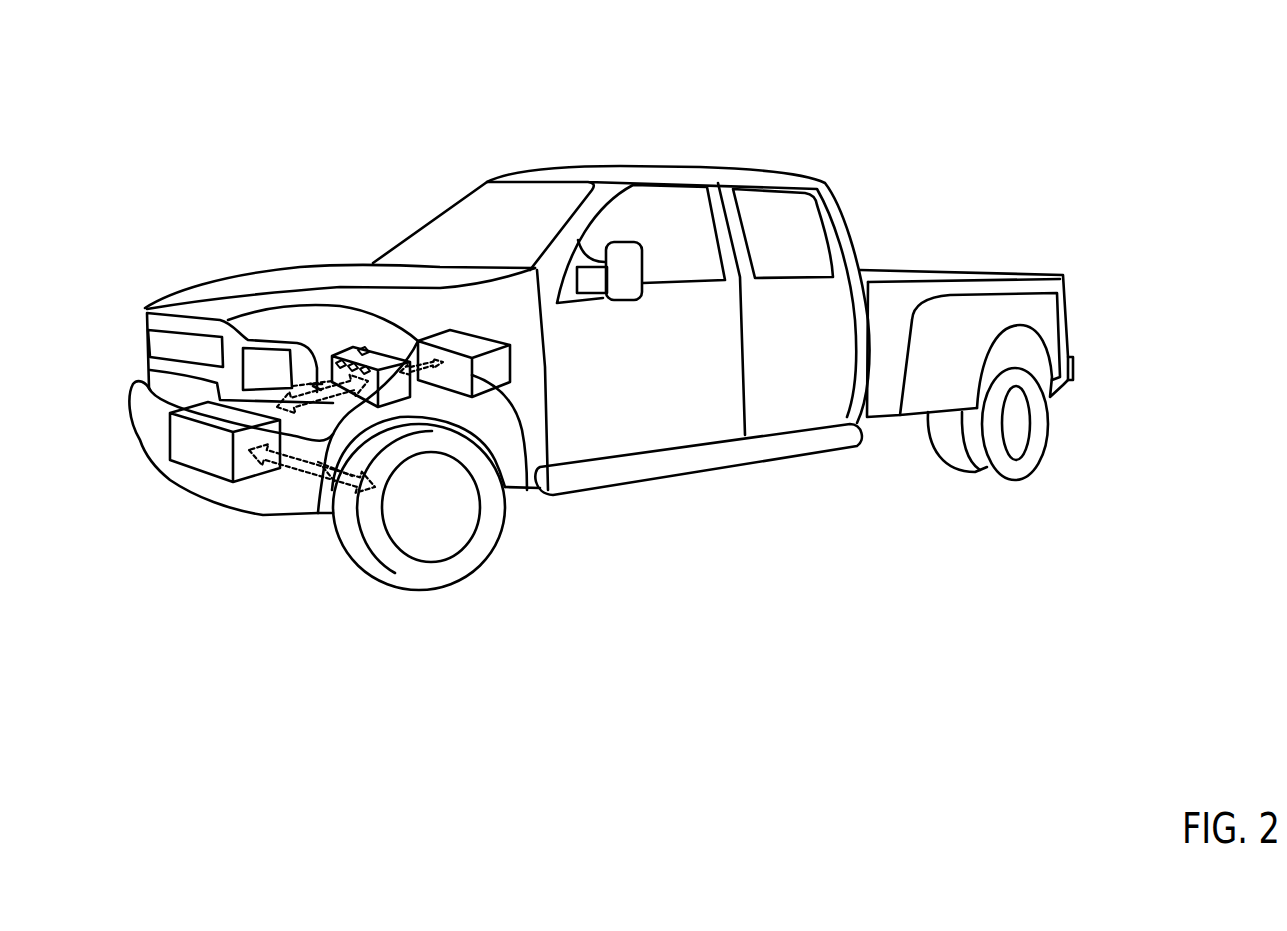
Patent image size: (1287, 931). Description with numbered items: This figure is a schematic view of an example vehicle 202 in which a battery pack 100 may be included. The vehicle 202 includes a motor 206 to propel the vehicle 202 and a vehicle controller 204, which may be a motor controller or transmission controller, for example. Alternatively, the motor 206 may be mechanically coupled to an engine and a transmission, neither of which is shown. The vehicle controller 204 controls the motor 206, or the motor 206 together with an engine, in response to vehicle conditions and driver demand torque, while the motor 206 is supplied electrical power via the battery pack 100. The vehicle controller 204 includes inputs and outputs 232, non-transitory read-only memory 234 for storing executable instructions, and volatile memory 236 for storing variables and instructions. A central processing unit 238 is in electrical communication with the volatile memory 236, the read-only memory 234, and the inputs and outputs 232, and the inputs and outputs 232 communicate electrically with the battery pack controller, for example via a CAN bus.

The battery pack 100 is at (448, 330).
The vehicle 202 is at (437, 218).
The vehicle controller 204 is at (317, 388).
The motor 206 is at (233, 481).
The inputs and outputs 232 is at (317, 388).
The read-only memory 234 is at (317, 388).
The volatile memory 236 is at (383, 359).
The central processing unit 238 is at (362, 350).